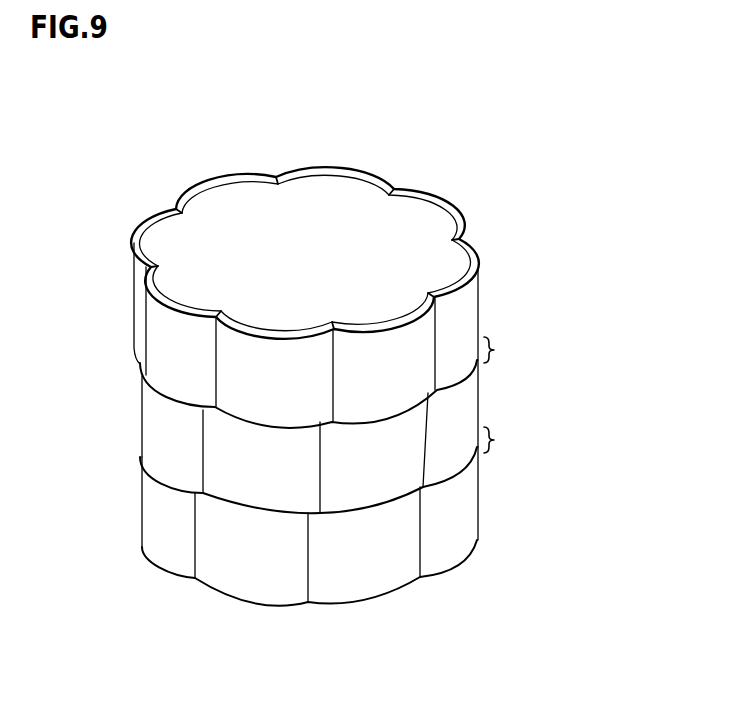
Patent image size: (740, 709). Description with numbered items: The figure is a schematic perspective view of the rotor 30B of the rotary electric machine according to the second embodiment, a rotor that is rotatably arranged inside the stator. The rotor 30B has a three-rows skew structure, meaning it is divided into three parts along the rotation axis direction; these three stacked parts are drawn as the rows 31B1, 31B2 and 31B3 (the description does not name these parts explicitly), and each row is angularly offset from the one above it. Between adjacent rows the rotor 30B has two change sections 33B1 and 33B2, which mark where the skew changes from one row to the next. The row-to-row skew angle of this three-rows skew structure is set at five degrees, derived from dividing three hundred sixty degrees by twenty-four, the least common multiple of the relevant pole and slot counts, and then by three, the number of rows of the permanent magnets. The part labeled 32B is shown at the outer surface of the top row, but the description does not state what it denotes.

The rotor 30B is at (517, 181).
The first core segment layer 31B1 is at (203, 183).
The second core segment layer 31B2 is at (408, 427).
The third core segment layer 31B3 is at (460, 503).
The slit between adjacent segments 32B is at (463, 257).
The change section 33B1 is at (518, 351).
The change section 33B2 is at (518, 442).